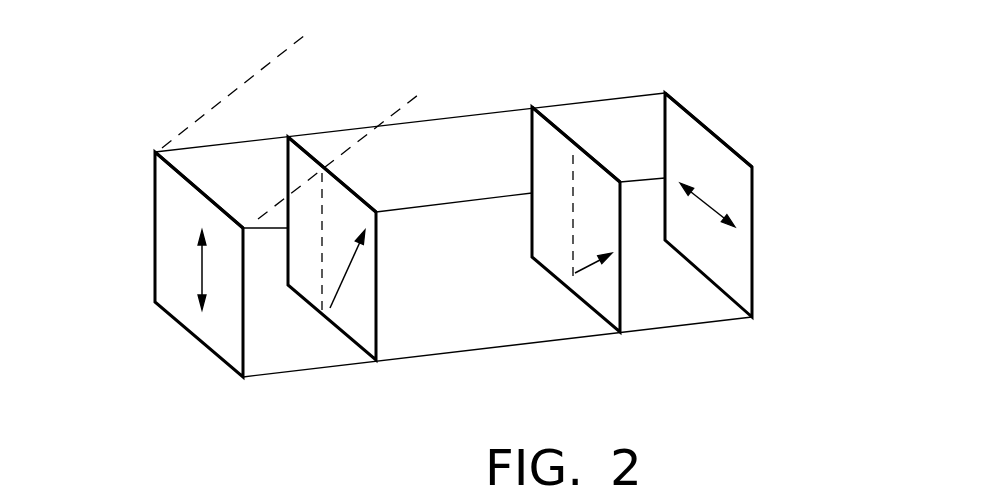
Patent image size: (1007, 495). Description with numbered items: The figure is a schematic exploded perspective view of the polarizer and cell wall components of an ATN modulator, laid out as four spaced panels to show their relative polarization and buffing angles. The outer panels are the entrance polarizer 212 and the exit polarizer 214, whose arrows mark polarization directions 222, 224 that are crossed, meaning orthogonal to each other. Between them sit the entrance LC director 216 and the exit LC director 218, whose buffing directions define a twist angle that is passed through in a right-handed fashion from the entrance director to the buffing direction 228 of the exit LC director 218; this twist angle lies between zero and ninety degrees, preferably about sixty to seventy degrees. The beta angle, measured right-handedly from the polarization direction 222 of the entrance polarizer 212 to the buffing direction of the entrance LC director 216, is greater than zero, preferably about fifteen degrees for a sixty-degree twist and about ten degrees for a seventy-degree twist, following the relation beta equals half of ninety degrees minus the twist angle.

The entrance polarizer 212 is at (183, 176).
The exit polarizer 214 is at (725, 143).
The entrance LC director 216 is at (312, 157).
The exit LC director 218 is at (558, 130).
The polarization direction 222 is at (200, 270).
The polarization direction 224 is at (345, 275).
The buffing direction of exit LC director 228 is at (587, 268).